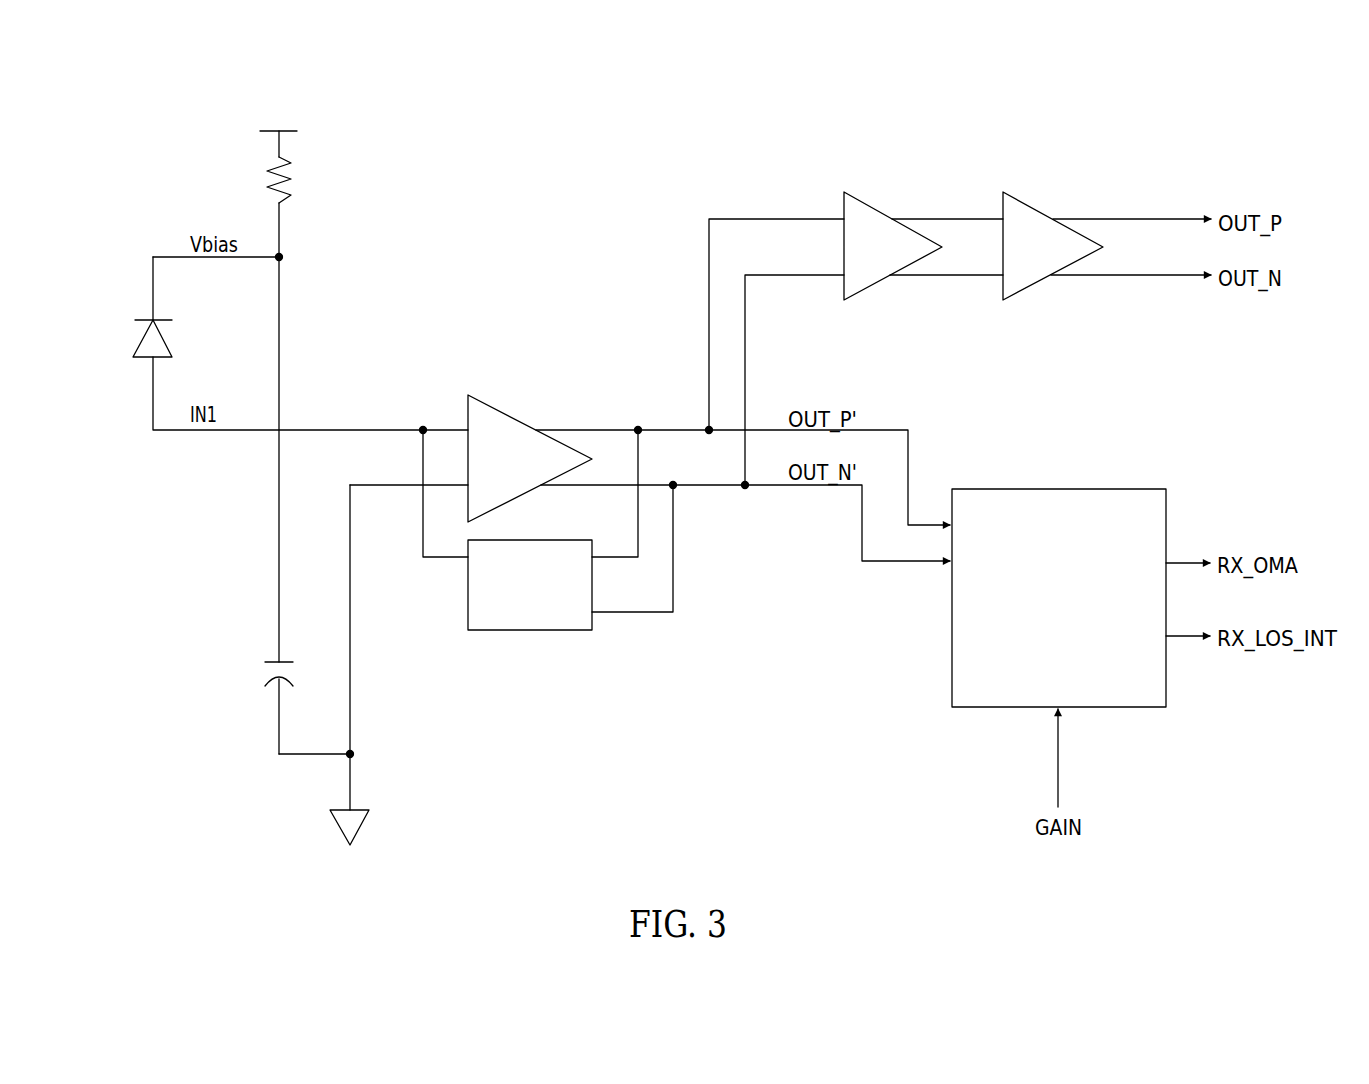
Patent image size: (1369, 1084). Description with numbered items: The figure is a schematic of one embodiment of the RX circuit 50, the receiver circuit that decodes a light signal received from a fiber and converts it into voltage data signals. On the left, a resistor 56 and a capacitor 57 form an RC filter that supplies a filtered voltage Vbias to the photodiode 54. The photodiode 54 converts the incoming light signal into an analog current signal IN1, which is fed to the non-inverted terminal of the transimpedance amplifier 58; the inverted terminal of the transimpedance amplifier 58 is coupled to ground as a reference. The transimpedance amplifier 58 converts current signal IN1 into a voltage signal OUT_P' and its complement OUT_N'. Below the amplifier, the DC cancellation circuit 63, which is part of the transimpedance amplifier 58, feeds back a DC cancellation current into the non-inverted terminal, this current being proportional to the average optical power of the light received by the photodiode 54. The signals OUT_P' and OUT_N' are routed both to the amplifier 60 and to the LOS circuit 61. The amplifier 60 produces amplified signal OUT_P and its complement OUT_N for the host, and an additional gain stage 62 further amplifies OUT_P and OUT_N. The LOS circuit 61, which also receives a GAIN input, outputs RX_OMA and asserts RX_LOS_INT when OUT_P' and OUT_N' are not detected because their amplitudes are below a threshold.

The RX circuit 50 is at (226, 93).
The photodiode 54 is at (119, 330).
The resistor 56 is at (302, 163).
The capacitor 57 is at (251, 658).
The transimpedance amplifier 58 is at (515, 424).
The amplifier 60 is at (878, 219).
The LOS circuit 61 is at (1122, 492).
The additional gain stage 62 is at (1038, 219).
The DC cancellation circuit 63 is at (572, 630).